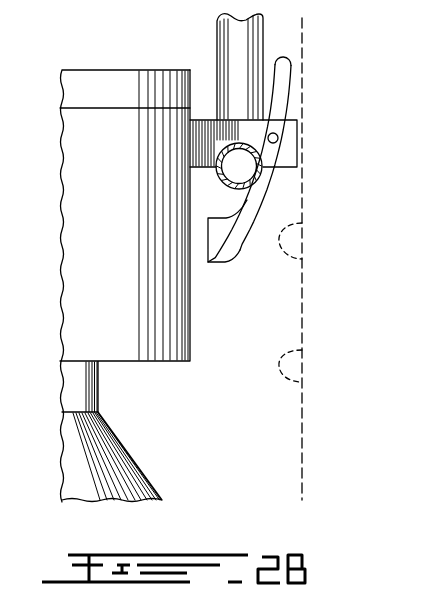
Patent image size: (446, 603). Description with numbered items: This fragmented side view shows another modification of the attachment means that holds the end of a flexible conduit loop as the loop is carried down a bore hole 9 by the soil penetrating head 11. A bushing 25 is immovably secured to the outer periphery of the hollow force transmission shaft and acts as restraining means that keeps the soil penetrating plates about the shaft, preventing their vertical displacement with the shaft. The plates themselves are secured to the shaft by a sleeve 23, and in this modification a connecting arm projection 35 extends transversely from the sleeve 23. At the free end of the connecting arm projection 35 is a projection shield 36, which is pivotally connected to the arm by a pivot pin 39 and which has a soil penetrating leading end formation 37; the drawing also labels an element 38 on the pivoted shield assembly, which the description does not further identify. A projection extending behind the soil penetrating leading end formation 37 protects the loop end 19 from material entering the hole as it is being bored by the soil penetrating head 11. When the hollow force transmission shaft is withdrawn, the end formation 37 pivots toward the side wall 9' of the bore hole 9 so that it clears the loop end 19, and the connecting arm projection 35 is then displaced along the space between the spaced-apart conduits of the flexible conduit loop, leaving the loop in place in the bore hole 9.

The bore hole 9 is at (325, 233).
The side wall of the bore hole 9' is at (328, 378).
The soil penetrating head 11 is at (130, 478).
The loop end 19 is at (240, 37).
The sleeve 23 is at (145, 336).
The bushing 25 is at (108, 122).
The connecting arm projection 35 is at (205, 130).
The projection shield 36 is at (275, 178).
The soil penetrating leading end formation 37 is at (233, 250).
The lever arm 38 is at (290, 77).
The pivot pin 39 is at (279, 140).